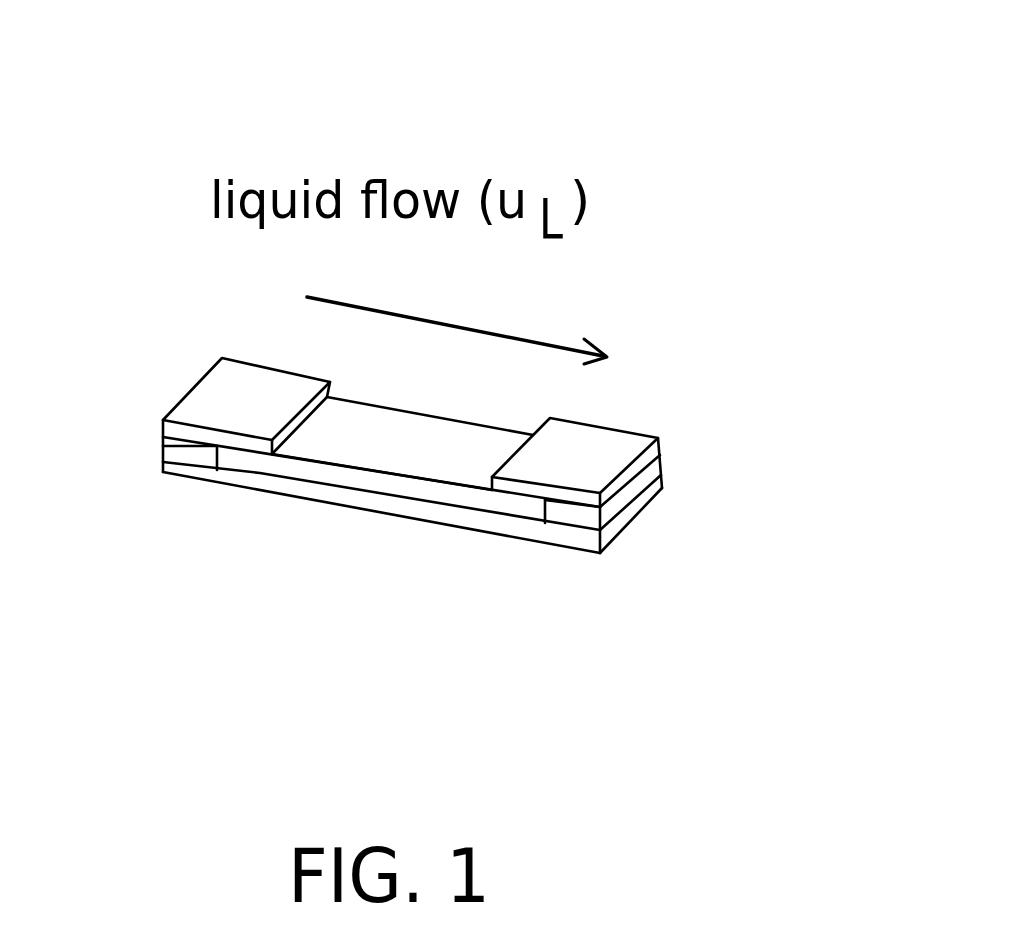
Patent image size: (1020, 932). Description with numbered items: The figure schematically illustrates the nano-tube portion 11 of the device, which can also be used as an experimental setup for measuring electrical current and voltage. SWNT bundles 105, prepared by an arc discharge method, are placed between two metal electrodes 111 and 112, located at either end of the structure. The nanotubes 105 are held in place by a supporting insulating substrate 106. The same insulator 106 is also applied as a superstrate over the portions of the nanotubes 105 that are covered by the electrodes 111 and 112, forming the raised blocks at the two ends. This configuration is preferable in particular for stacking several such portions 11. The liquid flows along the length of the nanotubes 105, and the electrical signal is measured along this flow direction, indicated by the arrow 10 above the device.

The arrow 10 is at (482, 329).
The nano-tube portion 11 is at (800, 132).
The SWNT bundles 105 is at (380, 437).
The supporting insulating substrate 106 is at (233, 384).
The metal electrode 111 is at (177, 448).
The metal electrode 112 is at (582, 518).